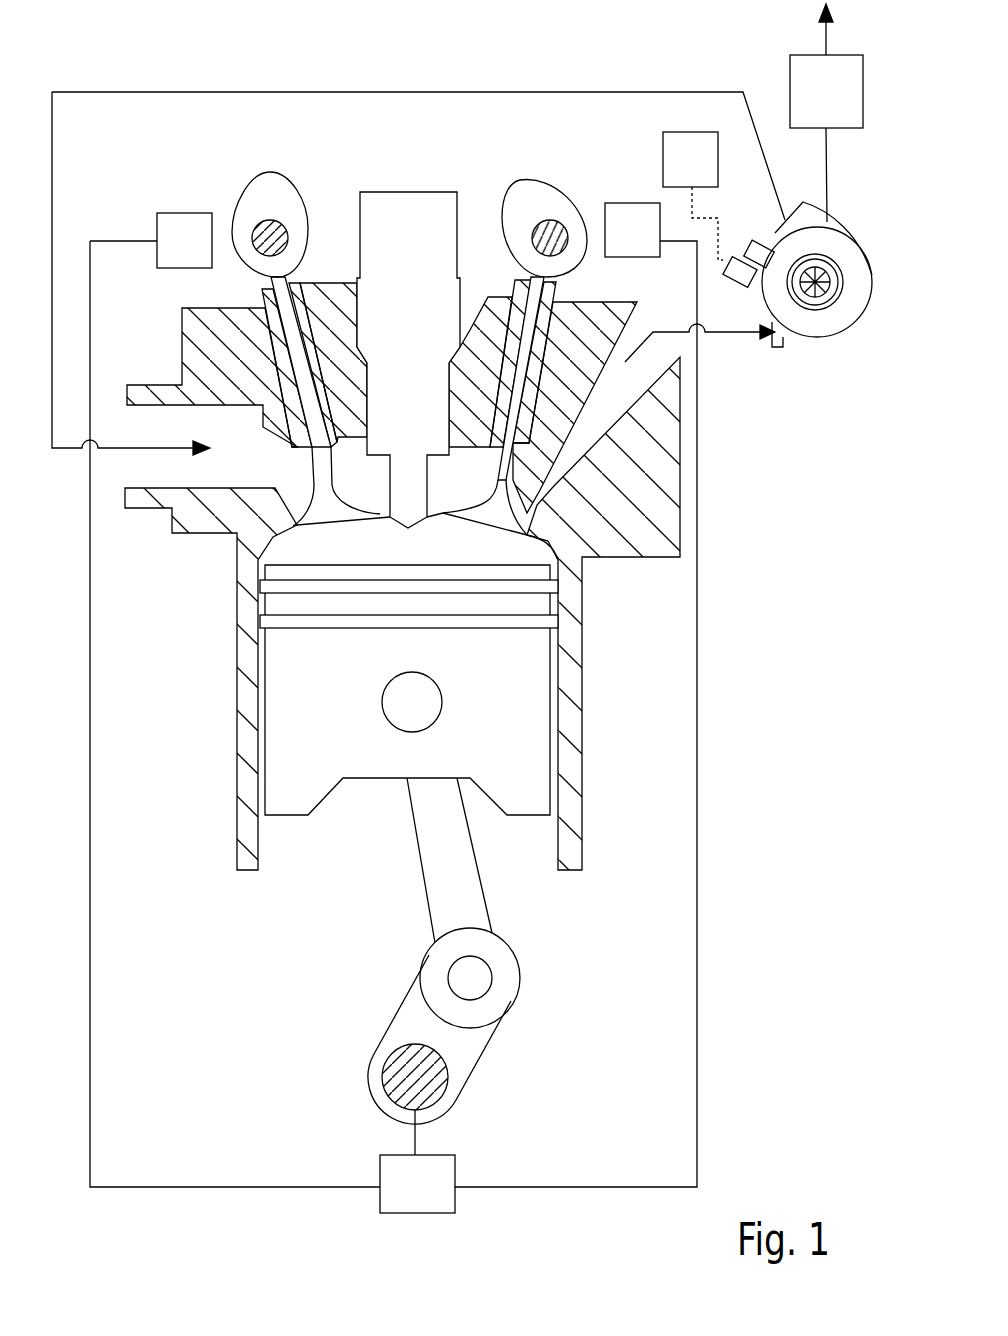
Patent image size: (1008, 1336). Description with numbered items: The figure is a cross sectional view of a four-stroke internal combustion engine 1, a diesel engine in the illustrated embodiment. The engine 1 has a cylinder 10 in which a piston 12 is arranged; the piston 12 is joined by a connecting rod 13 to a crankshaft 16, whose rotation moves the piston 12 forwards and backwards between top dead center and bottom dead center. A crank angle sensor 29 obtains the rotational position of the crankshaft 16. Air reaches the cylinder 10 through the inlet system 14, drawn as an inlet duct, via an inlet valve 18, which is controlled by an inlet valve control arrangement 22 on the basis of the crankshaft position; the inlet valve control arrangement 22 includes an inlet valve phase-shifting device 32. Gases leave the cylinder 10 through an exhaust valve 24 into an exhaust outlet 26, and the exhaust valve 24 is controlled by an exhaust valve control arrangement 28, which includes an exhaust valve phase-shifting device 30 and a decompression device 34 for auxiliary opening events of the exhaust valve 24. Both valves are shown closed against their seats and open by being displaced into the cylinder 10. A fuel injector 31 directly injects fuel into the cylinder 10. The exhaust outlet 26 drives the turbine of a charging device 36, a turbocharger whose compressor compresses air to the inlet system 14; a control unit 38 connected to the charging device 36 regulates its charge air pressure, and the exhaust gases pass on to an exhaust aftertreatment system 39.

The internal combustion engine 1 is at (508, 63).
The cylinder 10 is at (557, 853).
The piston 12 is at (521, 702).
The connecting rod 13 is at (450, 877).
The inlet system 14 is at (138, 427).
The crankshaft 16 is at (480, 1068).
The inlet valve 18 is at (337, 503).
The inlet valve control arrangement 22 is at (270, 170).
The exhaust valve 24 is at (488, 503).
The exhaust outlet 26 is at (657, 357).
The exhaust valve control arrangement 28 is at (517, 180).
The crank angle sensor 29 is at (433, 1200).
The exhaust valve phase-shifting device 30 is at (649, 250).
The fuel injector 31 is at (428, 340).
The inlet valve phase-shifting device 32 is at (201, 260).
The decompression device 34 is at (556, 278).
The charging device 36 is at (848, 337).
The control unit 38 is at (708, 178).
The exhaust aftertreatment system 39 is at (844, 112).